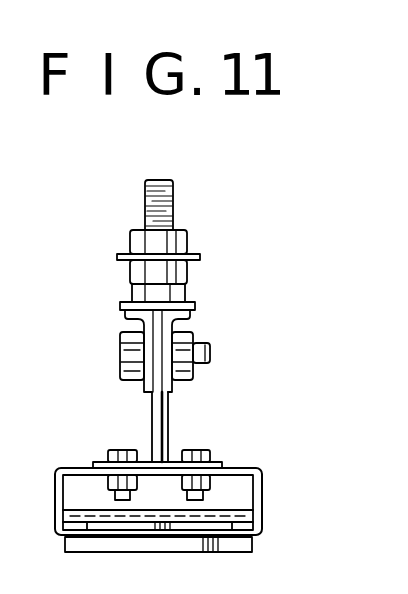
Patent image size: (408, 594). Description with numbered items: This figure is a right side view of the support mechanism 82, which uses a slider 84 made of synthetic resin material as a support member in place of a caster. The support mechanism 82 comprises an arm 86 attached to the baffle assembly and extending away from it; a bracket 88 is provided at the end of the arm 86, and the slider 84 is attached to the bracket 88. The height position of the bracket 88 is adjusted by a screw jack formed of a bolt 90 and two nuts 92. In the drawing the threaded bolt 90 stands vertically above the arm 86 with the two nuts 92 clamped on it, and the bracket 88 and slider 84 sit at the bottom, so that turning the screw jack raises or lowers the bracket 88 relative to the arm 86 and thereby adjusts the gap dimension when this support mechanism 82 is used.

The support mechanism 82 is at (199, 197).
The slider 84 is at (252, 539).
The arm 86 is at (120, 256).
The bracket 88 is at (233, 468).
The bolt 90 is at (145, 195).
The nuts 92 is at (187, 236).